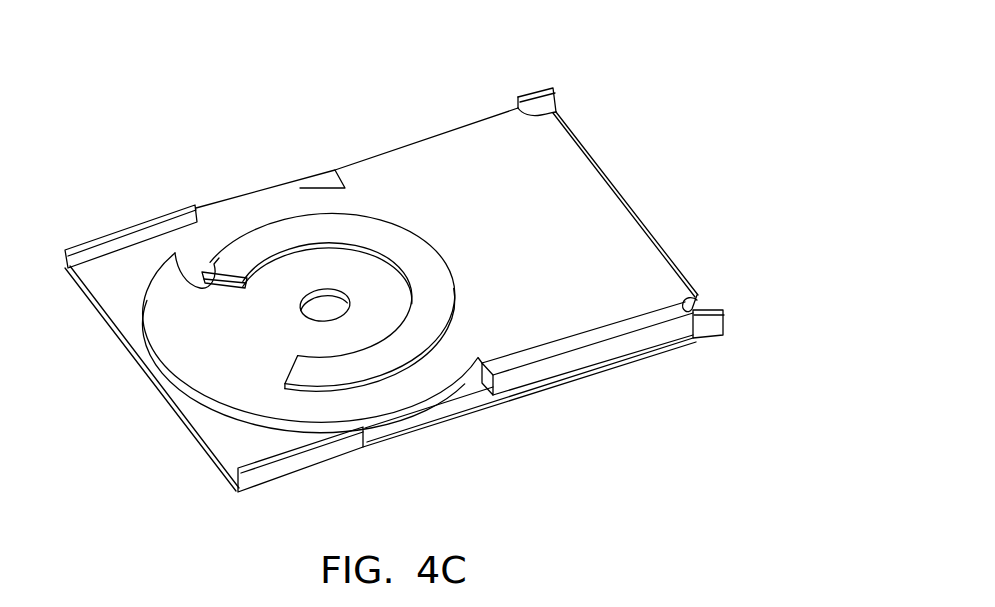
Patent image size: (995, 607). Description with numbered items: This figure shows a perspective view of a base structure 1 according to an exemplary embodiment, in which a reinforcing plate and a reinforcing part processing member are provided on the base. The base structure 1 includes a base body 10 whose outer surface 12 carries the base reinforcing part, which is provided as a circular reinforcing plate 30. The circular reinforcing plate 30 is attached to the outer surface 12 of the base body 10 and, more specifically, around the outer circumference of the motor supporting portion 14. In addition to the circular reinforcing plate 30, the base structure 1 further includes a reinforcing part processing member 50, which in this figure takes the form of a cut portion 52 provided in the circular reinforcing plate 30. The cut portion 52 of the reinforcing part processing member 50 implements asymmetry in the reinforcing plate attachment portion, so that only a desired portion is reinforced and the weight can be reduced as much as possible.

The base structure 1 is at (413, 80).
The base body 10 is at (515, 381).
The outer surface 12 is at (593, 223).
The motor supporting portion 14 is at (313, 303).
The circular reinforcing plate 30 is at (323, 230).
The reinforcing part processing member 50 is at (221, 288).
The cut portion 52 is at (175, 253).